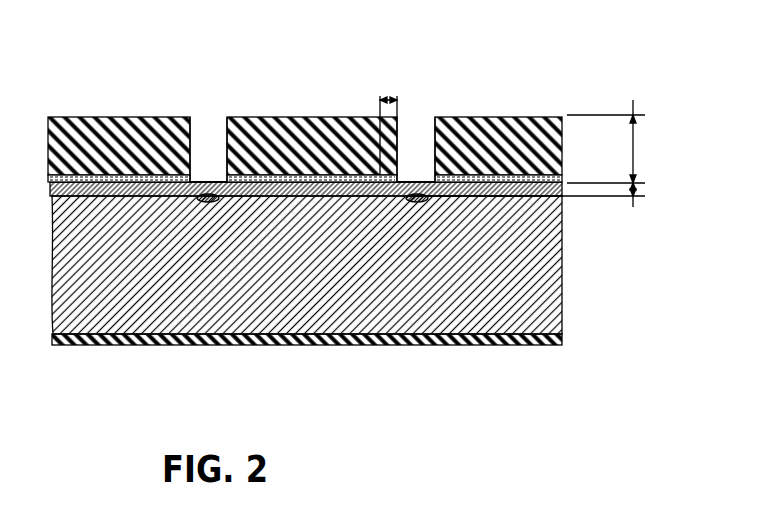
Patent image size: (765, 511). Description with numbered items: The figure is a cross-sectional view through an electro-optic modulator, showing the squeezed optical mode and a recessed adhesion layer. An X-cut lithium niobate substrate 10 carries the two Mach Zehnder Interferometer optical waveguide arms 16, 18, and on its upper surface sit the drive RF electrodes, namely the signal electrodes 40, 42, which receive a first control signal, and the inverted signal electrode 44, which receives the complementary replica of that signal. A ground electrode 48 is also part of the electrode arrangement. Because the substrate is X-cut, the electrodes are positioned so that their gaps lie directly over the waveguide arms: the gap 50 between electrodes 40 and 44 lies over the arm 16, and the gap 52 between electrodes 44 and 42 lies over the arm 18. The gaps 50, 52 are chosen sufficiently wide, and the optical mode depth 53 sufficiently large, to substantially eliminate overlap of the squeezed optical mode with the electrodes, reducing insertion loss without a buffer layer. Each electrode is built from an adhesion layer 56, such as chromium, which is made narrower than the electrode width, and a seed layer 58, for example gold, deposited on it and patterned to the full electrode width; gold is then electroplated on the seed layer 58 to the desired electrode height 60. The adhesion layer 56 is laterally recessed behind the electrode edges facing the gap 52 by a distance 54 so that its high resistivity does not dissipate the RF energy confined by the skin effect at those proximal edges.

The lithium niobate substrate 10 is at (553, 298).
The optical waveguide arm 16 is at (218, 203).
The optical waveguide arm 18 is at (428, 203).
The signal electrode 40 is at (139, 117).
The signal electrode 42 is at (488, 116).
The inverted signal electrode 44 is at (258, 117).
The ground electrode 48 is at (562, 340).
The gap 50 is at (227, 93).
The gap 52 is at (435, 92).
The optical mode depth 53 is at (634, 189).
The recess distance 54 is at (378, 100).
The adhesion layer 56 is at (342, 182).
The seed layer 58 is at (297, 177).
The electrode height 60 is at (634, 147).